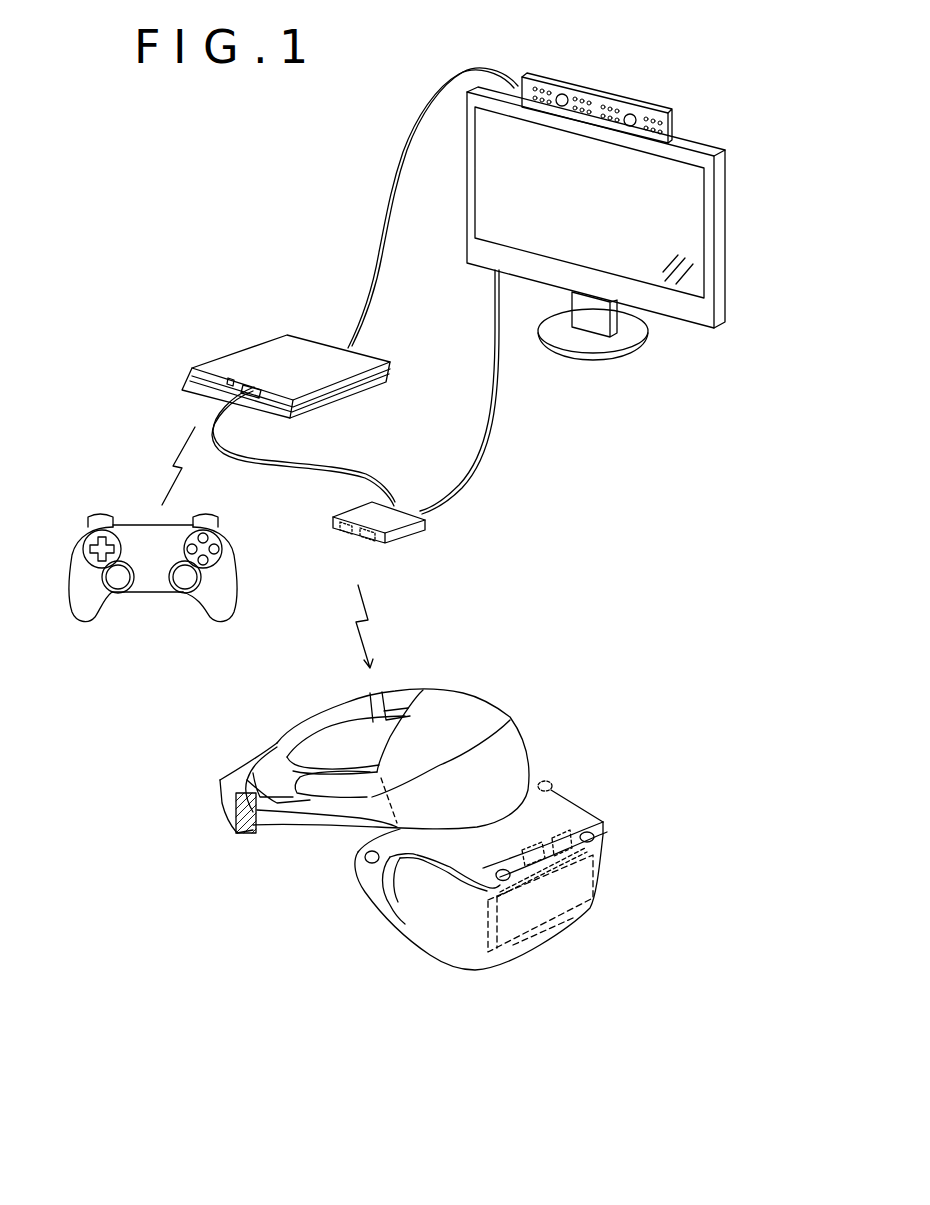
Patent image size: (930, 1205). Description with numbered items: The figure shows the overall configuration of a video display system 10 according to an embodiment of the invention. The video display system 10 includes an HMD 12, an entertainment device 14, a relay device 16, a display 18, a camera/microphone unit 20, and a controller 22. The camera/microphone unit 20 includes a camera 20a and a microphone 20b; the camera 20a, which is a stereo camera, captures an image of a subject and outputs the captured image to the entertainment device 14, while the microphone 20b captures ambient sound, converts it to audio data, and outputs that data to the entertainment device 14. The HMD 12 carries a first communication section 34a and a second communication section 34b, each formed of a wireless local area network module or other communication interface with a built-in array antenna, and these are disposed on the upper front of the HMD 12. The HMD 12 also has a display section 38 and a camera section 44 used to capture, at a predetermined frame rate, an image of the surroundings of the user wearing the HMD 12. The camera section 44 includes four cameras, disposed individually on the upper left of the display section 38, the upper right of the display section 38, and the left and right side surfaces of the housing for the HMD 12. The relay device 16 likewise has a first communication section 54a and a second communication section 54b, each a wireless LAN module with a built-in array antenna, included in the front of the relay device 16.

The video display system 10 is at (722, 962).
The HMD 12 is at (444, 851).
The entertainment device 14 is at (238, 352).
The relay device 16 is at (395, 547).
The display 18 is at (724, 238).
The camera/microphone unit 20 is at (623, 102).
The camera 20a is at (615, 157).
The microphone 20b is at (590, 85).
The controller 22 is at (240, 577).
The first communication section 34a is at (526, 856).
The second communication section 34b is at (558, 835).
The display section 38 is at (607, 866).
The camera section 44 is at (540, 780).
The first communication section 54a is at (372, 542).
The second communication section 54b is at (347, 537).